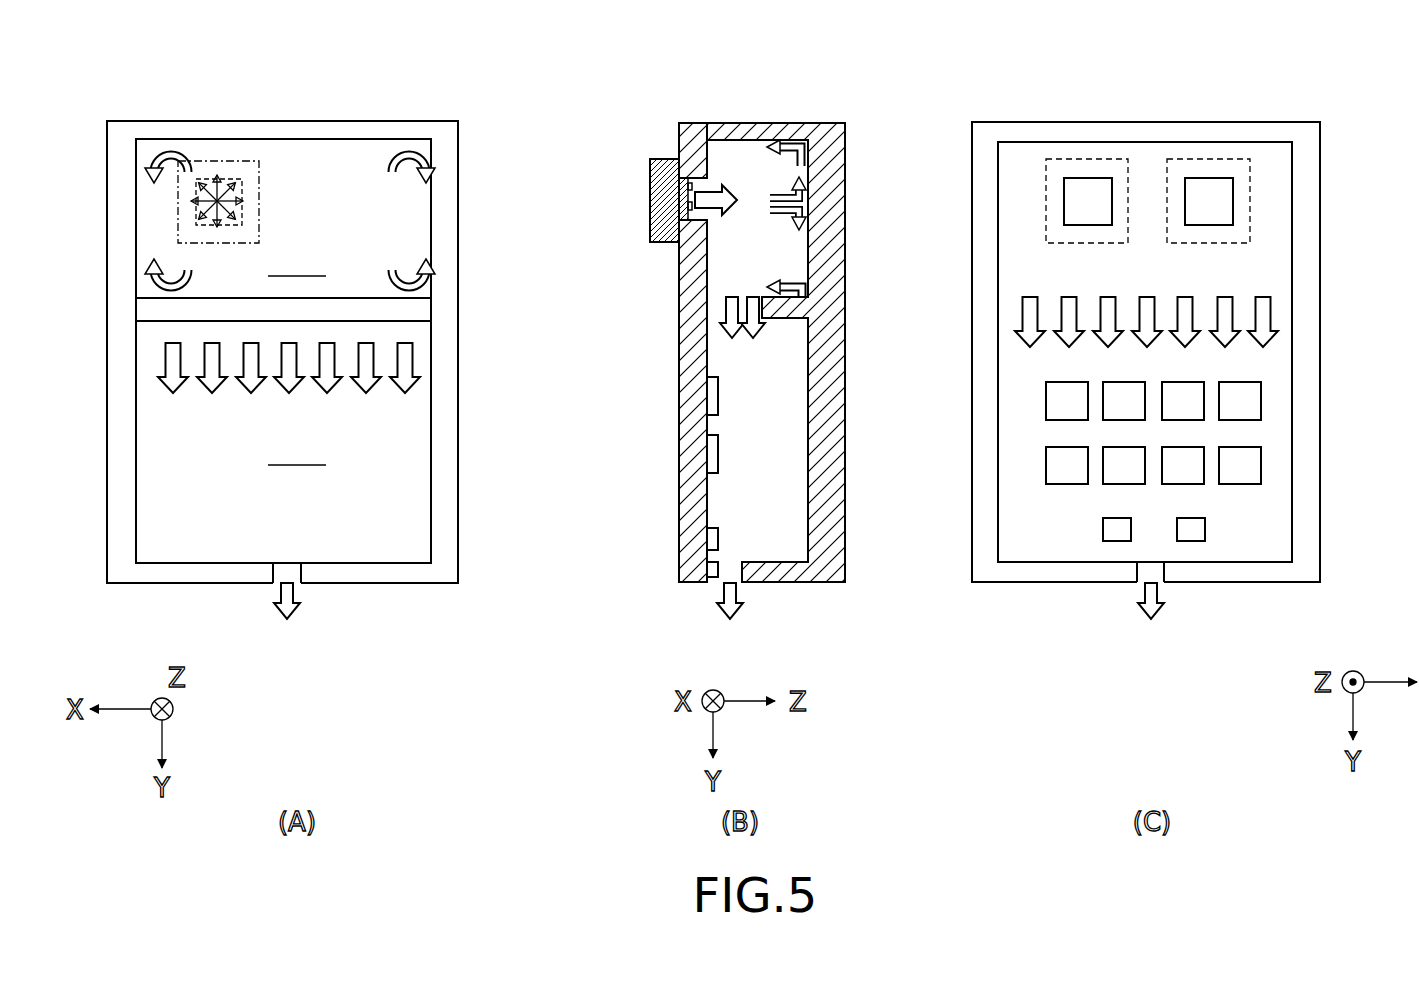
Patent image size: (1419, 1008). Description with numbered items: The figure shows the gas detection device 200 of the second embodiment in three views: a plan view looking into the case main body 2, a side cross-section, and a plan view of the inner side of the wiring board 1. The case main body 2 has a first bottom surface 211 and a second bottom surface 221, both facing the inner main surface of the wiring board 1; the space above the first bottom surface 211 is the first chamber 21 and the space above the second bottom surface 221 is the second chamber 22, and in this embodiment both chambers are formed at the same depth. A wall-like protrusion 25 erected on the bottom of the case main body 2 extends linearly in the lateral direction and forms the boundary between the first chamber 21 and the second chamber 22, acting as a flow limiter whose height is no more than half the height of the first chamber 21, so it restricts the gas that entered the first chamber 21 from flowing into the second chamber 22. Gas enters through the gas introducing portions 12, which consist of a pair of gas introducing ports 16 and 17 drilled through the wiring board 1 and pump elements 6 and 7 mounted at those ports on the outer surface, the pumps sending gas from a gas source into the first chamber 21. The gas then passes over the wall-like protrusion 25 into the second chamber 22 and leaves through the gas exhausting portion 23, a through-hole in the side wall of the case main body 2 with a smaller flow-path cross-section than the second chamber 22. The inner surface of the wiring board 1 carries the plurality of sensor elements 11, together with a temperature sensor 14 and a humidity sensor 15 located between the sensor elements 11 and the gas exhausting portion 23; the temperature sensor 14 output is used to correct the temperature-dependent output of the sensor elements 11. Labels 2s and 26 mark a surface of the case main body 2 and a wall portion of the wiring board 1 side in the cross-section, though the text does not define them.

The wiring board 1 is at (692, 385).
The case main body 2 is at (345, 131).
The top surface of case 2s is at (747, 122).
The pump element 6 is at (660, 183).
The pump element 7 is at (212, 160).
The sensor element 11 is at (712, 450).
The gas introducing portion 12 is at (157, 63).
The temperature sensor 14 is at (1112, 532).
The humidity sensor 15 is at (1190, 532).
The gas introducing port 16 is at (695, 183).
The gas introducing port 17 is at (240, 180).
The first chamber 21 is at (428, 192).
The second chamber 22 is at (423, 368).
The gas exhausting portion 23 is at (278, 575).
The wall-like protrusion 25 is at (413, 322).
The side wall 26 is at (710, 333).
The gas detection device 200 is at (841, 80).
The first bottom surface 211 is at (297, 257).
The second bottom surface 221 is at (297, 446).